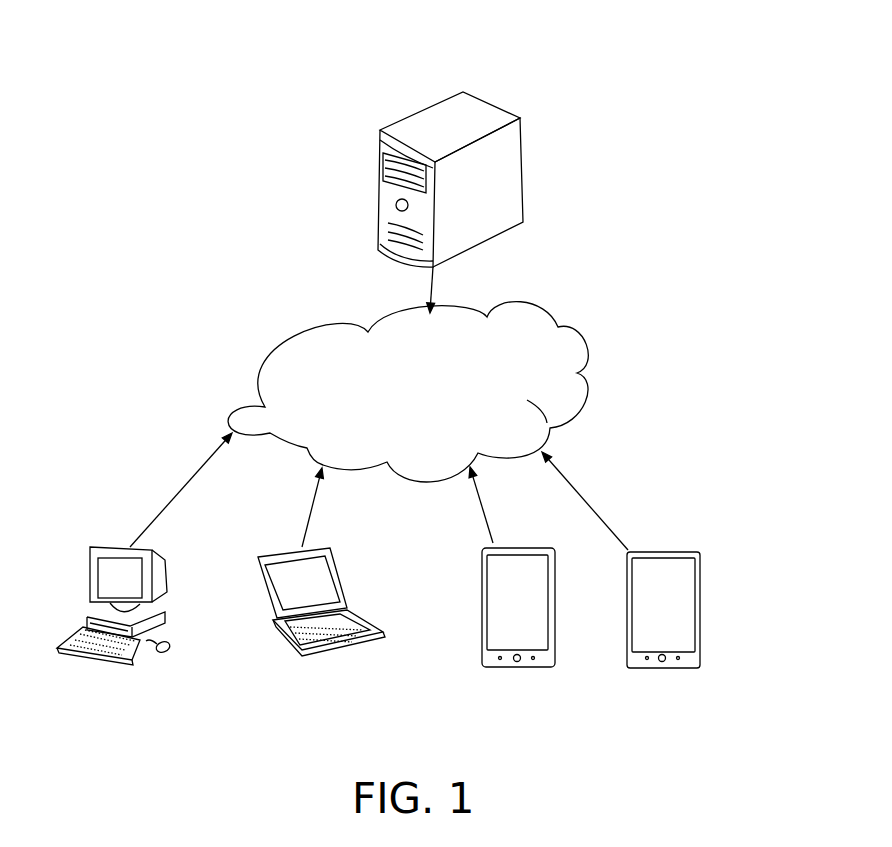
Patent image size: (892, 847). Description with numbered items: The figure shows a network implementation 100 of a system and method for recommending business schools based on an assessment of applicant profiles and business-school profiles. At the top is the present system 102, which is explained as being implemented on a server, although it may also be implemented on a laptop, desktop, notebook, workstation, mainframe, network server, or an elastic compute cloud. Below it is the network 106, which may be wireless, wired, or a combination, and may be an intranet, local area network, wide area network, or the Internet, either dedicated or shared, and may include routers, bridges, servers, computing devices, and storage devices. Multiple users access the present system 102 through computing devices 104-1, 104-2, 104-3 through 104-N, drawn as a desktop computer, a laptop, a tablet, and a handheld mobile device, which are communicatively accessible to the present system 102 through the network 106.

The network implementation 100 is at (126, 77).
The present system 102 is at (523, 177).
The network 106 is at (408, 392).
The computing device 104-1 is at (140, 653).
The computing device 104-2 is at (330, 653).
The computing device 104-3 is at (505, 667).
The computing device 104-N is at (673, 667).